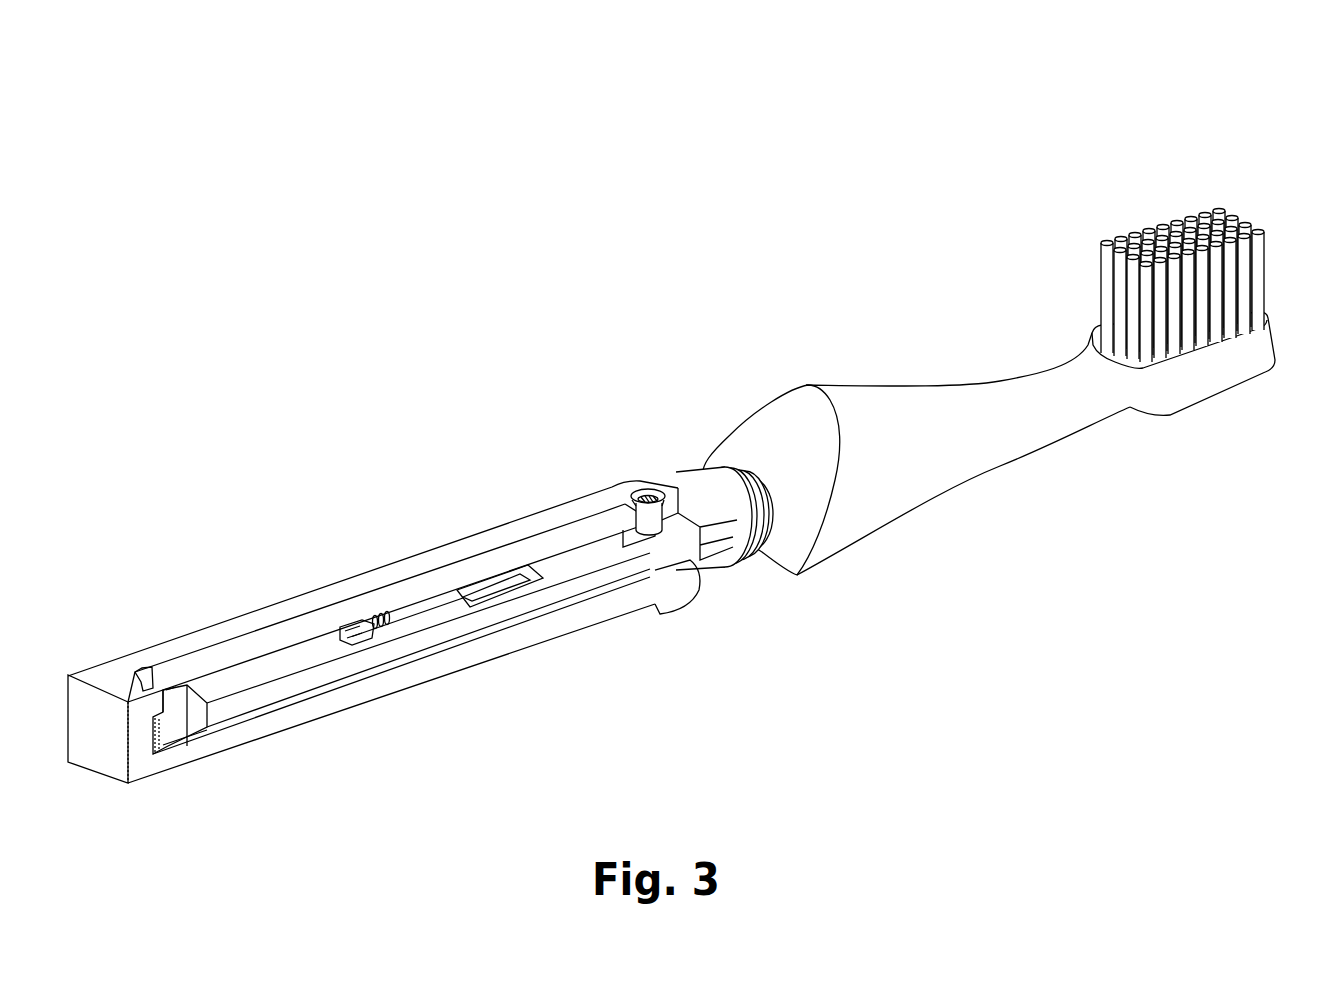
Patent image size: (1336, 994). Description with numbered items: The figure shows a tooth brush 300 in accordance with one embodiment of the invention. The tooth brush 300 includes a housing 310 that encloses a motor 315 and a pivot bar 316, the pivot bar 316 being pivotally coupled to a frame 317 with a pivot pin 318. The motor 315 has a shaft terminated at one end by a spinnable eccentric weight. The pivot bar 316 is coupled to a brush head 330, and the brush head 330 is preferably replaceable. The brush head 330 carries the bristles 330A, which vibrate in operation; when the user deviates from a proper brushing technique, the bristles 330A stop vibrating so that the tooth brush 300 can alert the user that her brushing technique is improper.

The tooth brush 300 is at (1185, 102).
The housing 310 is at (627, 402).
The motor 315 is at (425, 610).
The pivot bar 316 is at (598, 555).
The frame 317 is at (405, 570).
The pivot pin 318 is at (652, 512).
The brush head 330 is at (888, 490).
The bristles 330A is at (1232, 204).